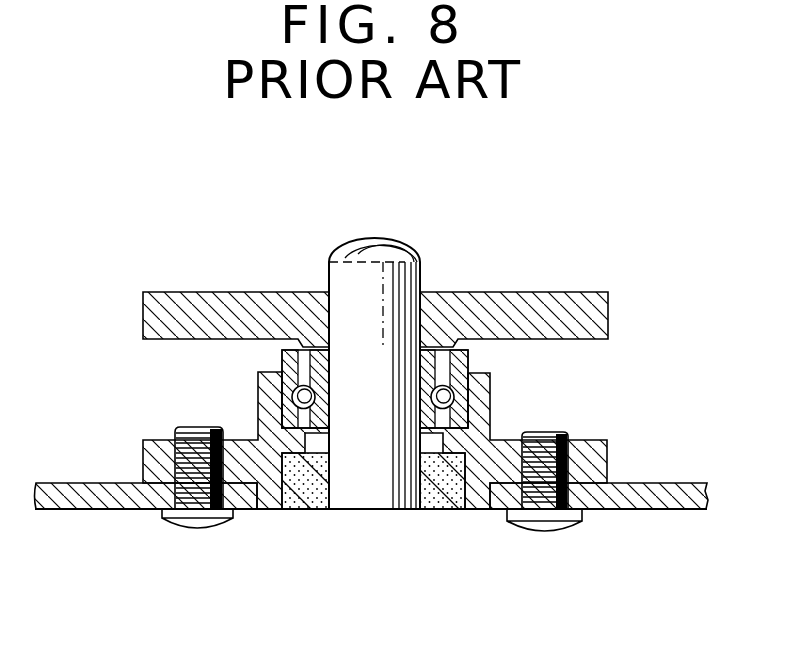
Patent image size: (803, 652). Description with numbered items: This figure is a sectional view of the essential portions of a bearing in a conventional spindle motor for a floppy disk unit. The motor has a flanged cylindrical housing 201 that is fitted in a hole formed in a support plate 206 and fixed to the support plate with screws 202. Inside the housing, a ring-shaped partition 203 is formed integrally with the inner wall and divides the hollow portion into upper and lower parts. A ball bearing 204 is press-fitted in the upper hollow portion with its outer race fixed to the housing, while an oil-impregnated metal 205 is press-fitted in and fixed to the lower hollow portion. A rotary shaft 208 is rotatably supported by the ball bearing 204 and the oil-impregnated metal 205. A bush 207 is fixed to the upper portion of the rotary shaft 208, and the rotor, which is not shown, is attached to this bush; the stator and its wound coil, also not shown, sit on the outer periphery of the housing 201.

The housing 201 is at (607, 463).
The screws 202 is at (553, 531).
The partition 203 is at (297, 510).
The ball bearing 204 is at (465, 371).
The oil-impregnated metal 205 is at (440, 510).
The support plate 206 is at (657, 510).
The bush 207 is at (223, 292).
The rotary shaft 208 is at (410, 248).